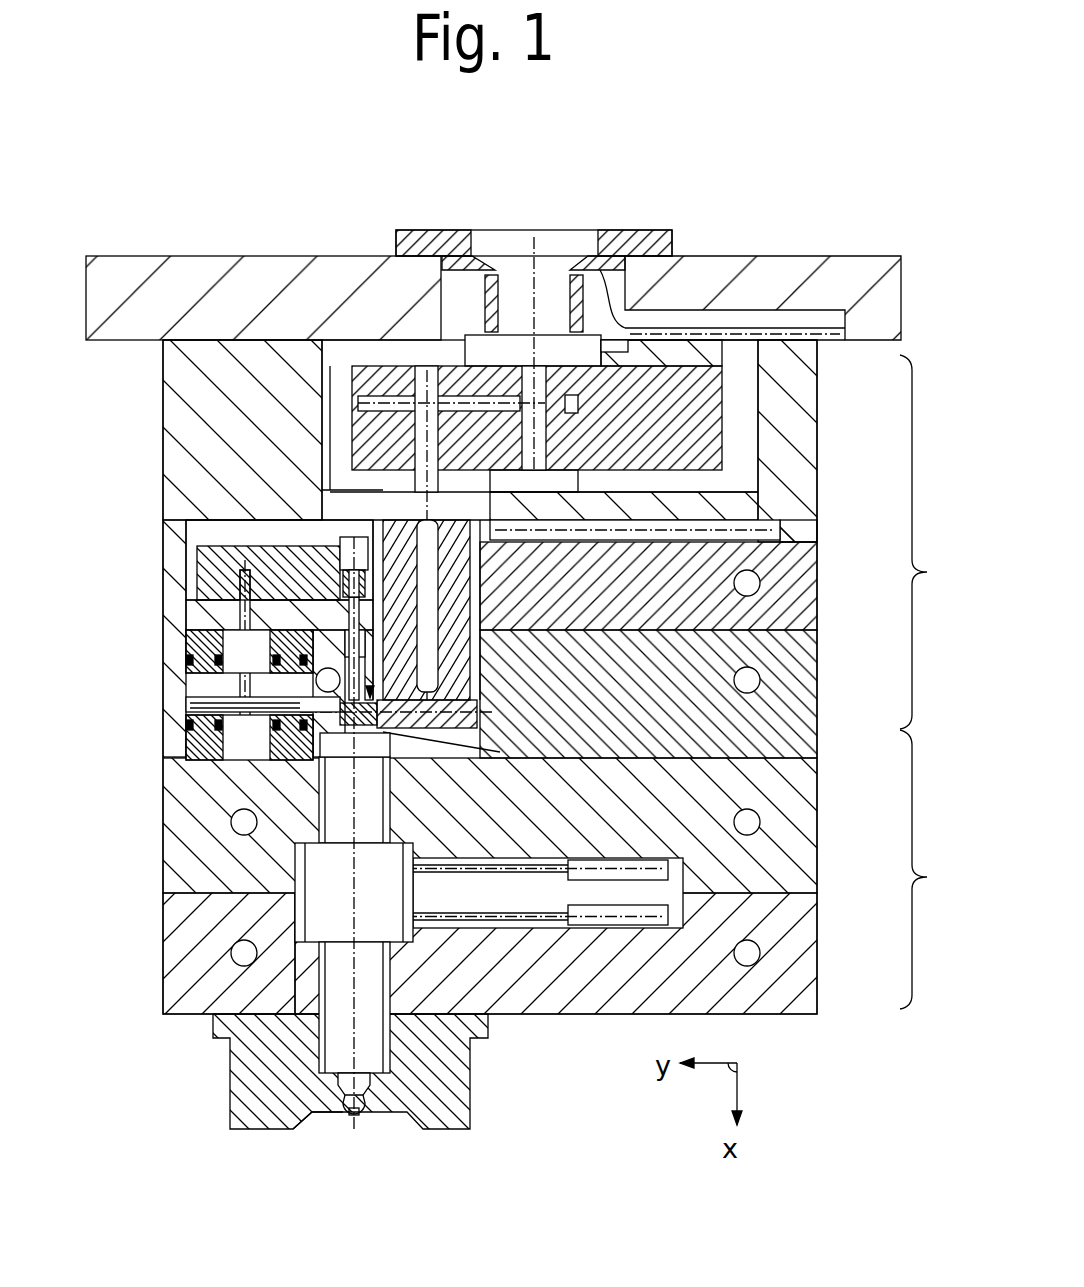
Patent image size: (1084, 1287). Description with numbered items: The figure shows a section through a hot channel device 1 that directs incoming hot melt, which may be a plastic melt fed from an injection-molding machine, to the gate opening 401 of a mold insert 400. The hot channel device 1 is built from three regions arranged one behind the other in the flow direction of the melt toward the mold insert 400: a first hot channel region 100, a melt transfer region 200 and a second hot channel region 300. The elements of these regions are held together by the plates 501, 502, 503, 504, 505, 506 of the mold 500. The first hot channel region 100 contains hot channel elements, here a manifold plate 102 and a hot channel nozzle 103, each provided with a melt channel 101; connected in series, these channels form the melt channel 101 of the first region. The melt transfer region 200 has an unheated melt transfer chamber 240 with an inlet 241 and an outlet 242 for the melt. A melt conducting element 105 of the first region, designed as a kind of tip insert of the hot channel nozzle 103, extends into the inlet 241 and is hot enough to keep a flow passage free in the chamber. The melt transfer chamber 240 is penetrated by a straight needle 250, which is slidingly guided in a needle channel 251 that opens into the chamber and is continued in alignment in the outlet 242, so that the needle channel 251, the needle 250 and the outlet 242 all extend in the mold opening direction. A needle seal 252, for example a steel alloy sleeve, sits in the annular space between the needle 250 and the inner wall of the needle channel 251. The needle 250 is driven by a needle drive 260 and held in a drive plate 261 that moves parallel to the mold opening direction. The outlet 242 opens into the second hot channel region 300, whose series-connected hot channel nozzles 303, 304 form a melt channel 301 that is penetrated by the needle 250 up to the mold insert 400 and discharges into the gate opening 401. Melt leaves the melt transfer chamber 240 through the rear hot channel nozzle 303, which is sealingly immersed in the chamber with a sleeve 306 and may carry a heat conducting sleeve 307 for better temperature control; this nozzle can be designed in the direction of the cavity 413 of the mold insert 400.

The hot channel device 1 is at (178, 247).
The first hot channel region 100 is at (931, 542).
The melt channel 101 is at (437, 405).
The manifold plate 102 is at (690, 430).
The hot channel nozzle 103 is at (440, 560).
The melt conducting element 105 is at (190, 719).
The melt transfer region 200 is at (355, 578).
The melt transfer chamber 240 is at (205, 683).
The inlet 241 is at (350, 537).
The outlet 242 is at (330, 752).
The needle 250 is at (345, 580).
The needle channel 251 is at (352, 615).
The needle seal 252 is at (300, 697).
The needle drive 260 is at (320, 655).
The drive plate 261 is at (330, 665).
The second hot channel region 300 is at (929, 869).
The melt channel 301 is at (355, 815).
The rear hot channel nozzle 303 is at (340, 790).
The hot channel nozzle 304 is at (330, 975).
The sleeve 306 is at (430, 735).
The heat conducting sleeve 307 is at (480, 748).
The mold insert 400 is at (283, 1086).
The gate opening 401 is at (328, 1117).
The cavity 413 is at (368, 1145).
The mold 500 is at (760, 250).
The plate 501 is at (880, 300).
The plate 502 is at (185, 372).
The plate 503 is at (790, 542).
The plate 504 is at (770, 650).
The plate 505 is at (770, 852).
The plate 506 is at (790, 985).